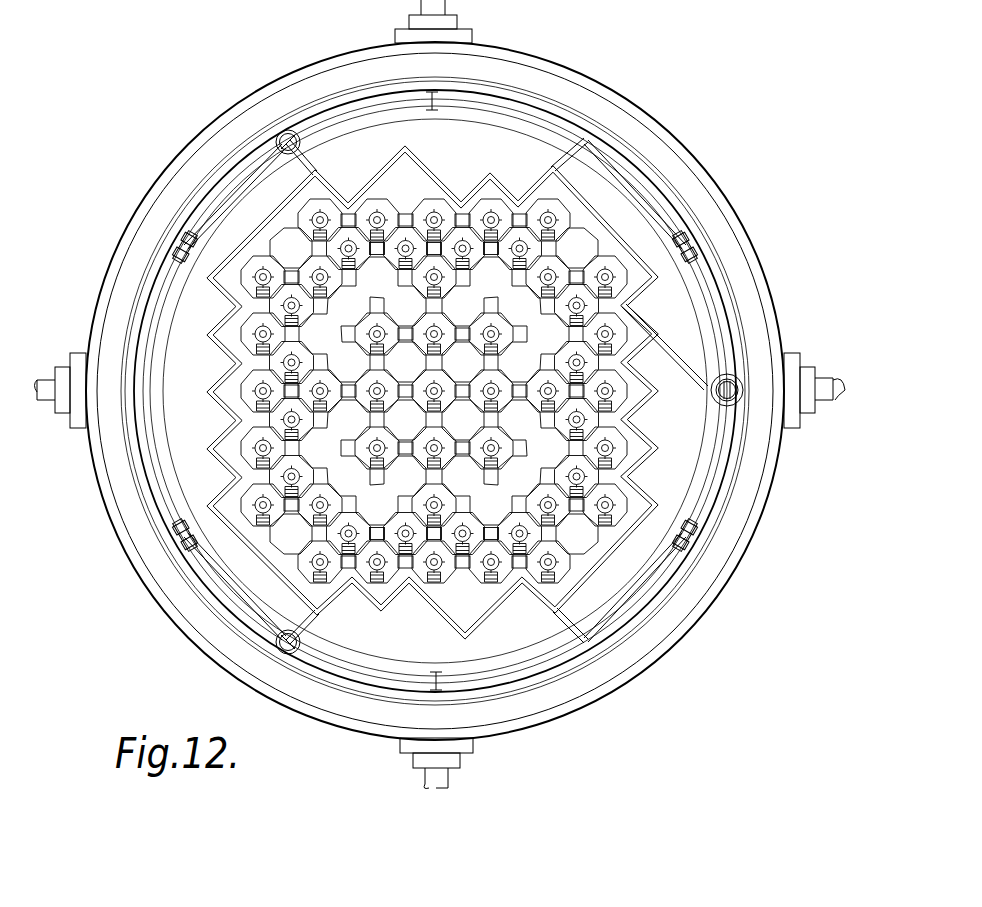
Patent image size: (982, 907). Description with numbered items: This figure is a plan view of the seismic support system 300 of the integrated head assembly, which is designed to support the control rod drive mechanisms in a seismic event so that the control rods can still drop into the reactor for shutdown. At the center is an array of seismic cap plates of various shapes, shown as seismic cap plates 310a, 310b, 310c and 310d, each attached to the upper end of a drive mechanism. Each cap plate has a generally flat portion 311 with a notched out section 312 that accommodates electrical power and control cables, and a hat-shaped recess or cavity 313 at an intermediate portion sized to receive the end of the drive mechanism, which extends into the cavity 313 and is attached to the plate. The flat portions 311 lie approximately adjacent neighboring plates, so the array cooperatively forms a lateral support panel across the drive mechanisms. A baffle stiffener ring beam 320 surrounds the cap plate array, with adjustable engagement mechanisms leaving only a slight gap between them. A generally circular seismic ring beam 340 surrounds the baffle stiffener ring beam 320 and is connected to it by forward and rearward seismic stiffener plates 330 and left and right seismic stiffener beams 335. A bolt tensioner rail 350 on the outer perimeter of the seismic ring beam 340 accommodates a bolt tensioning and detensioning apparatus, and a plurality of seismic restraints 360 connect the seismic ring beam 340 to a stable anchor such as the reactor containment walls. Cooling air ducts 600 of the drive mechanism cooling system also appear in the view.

The seismic support system 300 is at (699, 62).
The seismic cap plate 310a is at (396, 324).
The seismic cap plate 310b is at (595, 546).
The seismic cap plate 310c is at (628, 330).
The seismic cap plate 310d is at (597, 237).
The flat portion 311 is at (620, 456).
The notched out section 312 is at (626, 498).
The hat-shaped recess or cavity 313 is at (624, 440).
The baffle stiffener ring beam 320 is at (570, 194).
The seismic stiffener plate 330 is at (473, 153).
The seismic stiffener beam 335 is at (210, 246).
The seismic ring beam 340 is at (512, 102).
The bolt tensioner rail 350 is at (604, 672).
The seismic restraint 360 is at (472, 34).
The cooling air duct 600 is at (703, 372).